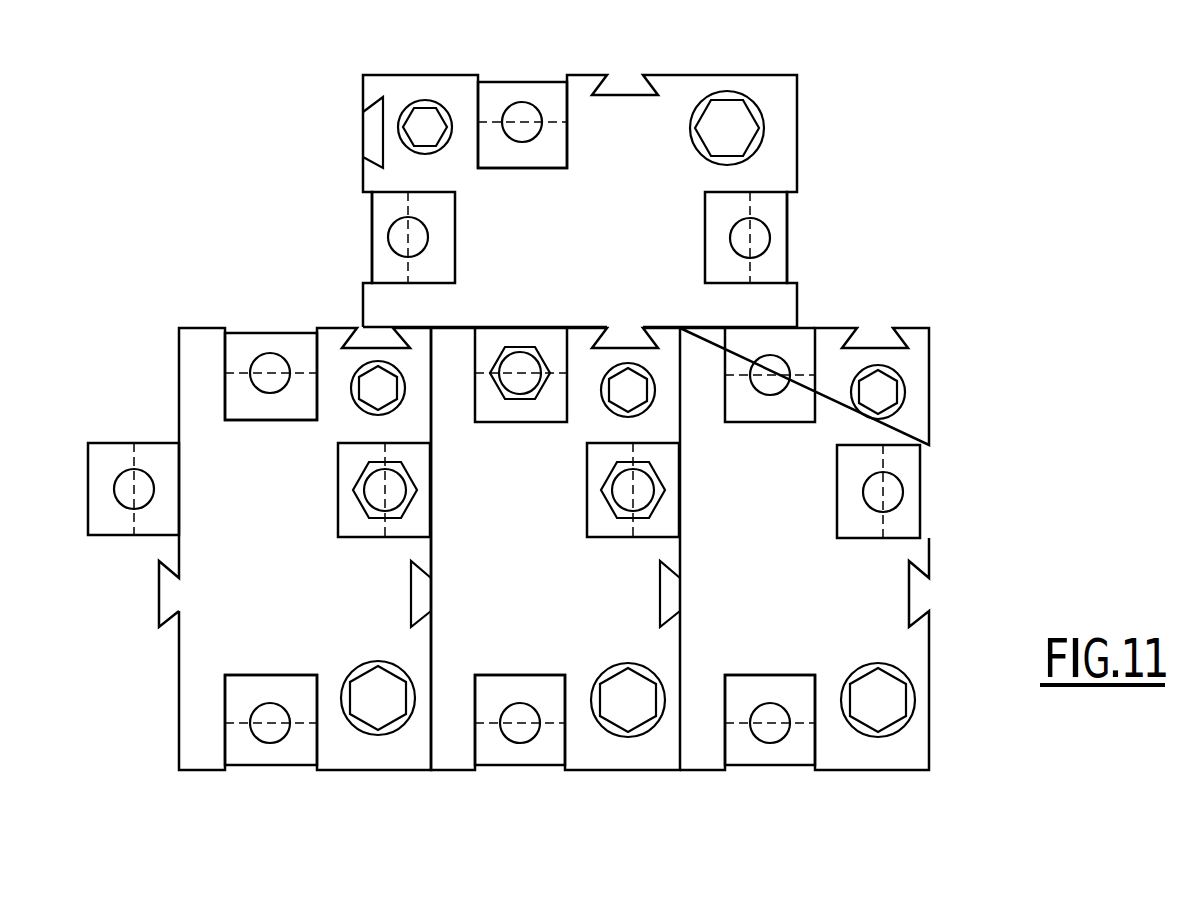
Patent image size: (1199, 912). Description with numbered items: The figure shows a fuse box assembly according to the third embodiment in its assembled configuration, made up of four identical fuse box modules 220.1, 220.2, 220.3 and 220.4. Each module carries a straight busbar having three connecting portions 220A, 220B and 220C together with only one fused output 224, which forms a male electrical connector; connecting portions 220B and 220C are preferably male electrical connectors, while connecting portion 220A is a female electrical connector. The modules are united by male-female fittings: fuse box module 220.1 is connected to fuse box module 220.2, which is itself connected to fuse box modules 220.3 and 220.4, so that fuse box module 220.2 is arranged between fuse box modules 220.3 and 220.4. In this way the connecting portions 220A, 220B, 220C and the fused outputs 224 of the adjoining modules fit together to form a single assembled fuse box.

The fuse box module 220.1 is at (580, 201).
The fuse box module 220.2 is at (555, 549).
The fuse box module 220.3 is at (804, 549).
The fuse box module 220.4 is at (295, 549).
The connecting portion 220A is at (101, 462).
The connecting portion 220B is at (386, 215).
The connecting portion 220C is at (495, 93).
The fused output 224 is at (772, 211).